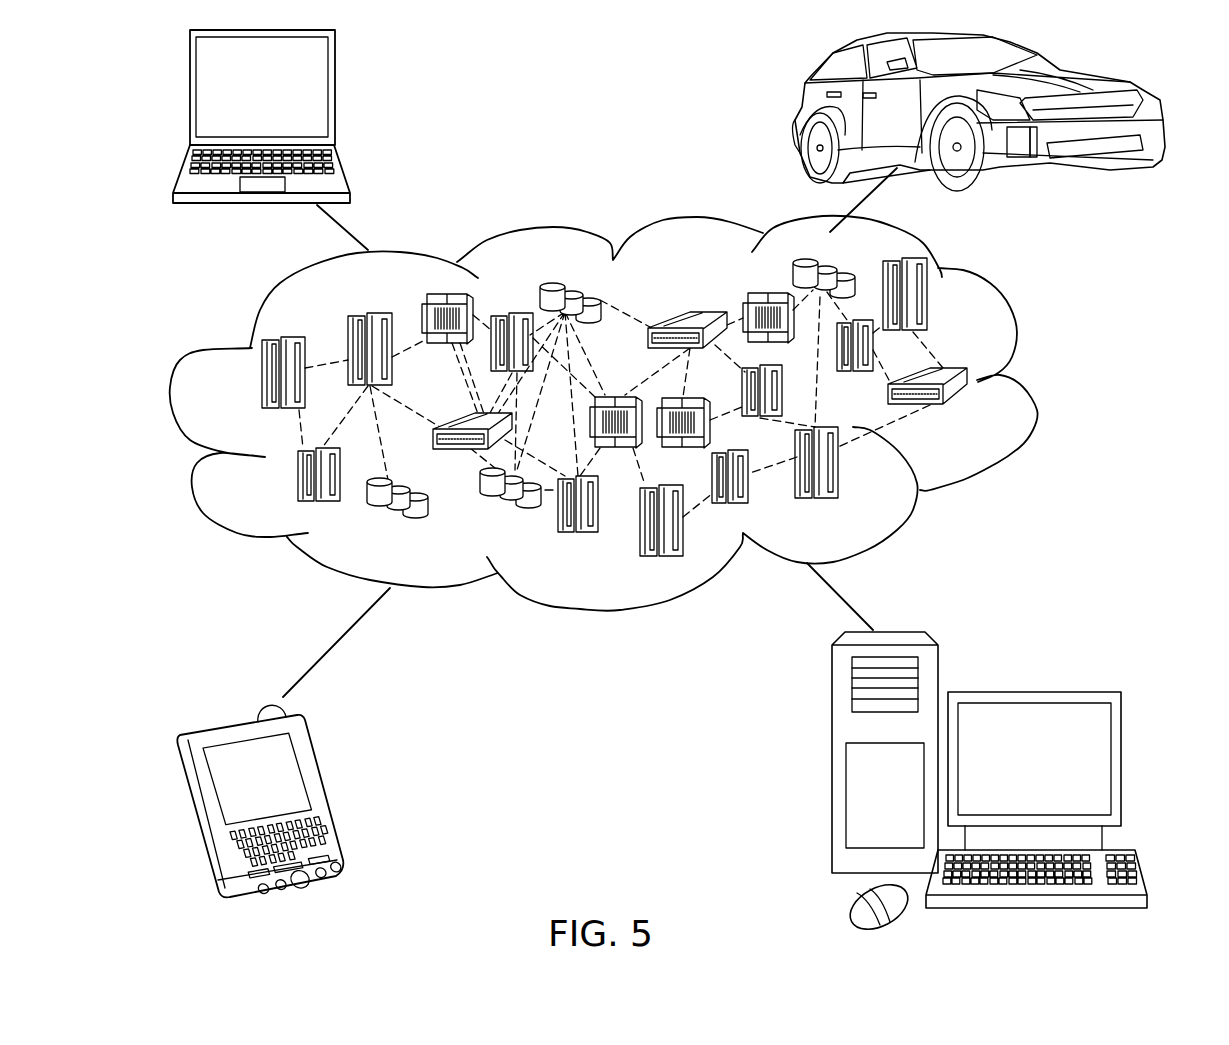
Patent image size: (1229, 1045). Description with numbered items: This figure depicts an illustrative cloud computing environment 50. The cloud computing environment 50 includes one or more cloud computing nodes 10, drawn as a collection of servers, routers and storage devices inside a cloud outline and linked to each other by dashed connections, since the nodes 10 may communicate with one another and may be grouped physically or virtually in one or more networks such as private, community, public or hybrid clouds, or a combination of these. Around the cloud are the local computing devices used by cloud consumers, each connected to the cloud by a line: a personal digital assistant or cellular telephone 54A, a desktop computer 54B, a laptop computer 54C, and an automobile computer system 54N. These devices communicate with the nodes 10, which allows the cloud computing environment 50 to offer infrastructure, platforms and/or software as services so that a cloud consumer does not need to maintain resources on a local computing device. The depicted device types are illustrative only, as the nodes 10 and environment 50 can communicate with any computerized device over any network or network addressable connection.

The cloud computing node 10 is at (970, 418).
The cloud computing environment 50 is at (1033, 383).
The personal digital assistant or cellular telephone 54A is at (318, 792).
The desktop computer 54B is at (1032, 692).
The laptop computer 54C is at (335, 97).
The automobile computer system 54N is at (798, 110).